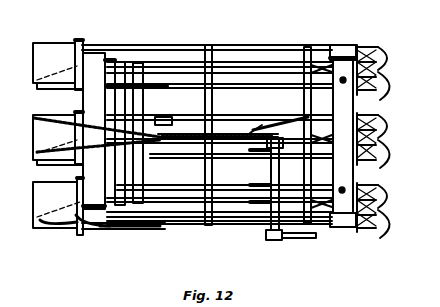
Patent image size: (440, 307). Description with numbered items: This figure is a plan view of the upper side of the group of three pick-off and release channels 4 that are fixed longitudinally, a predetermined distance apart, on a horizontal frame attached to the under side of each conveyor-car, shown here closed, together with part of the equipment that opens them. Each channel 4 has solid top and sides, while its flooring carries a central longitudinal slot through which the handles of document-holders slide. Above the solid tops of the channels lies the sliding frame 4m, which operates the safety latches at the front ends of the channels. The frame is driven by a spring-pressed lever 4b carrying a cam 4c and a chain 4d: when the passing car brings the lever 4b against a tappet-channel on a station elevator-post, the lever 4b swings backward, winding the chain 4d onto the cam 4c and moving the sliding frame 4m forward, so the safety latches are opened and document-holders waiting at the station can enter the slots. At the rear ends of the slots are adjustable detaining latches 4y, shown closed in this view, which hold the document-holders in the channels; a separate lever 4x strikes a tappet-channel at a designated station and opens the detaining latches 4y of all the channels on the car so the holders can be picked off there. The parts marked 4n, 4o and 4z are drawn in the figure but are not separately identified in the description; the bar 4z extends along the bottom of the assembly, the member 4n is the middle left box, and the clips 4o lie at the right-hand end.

The pick-off and release channel 4 is at (245, 45).
The sliding frame 4m is at (140, 64).
The box 4n is at (75, 113).
The chain 4d is at (190, 132).
The cam 4c is at (259, 125).
The clip 4o is at (382, 140).
The detaining latch 4y is at (43, 226).
The lever 4x is at (84, 228).
The bottom bar 4z is at (140, 233).
The spring-pressed lever 4b is at (292, 242).